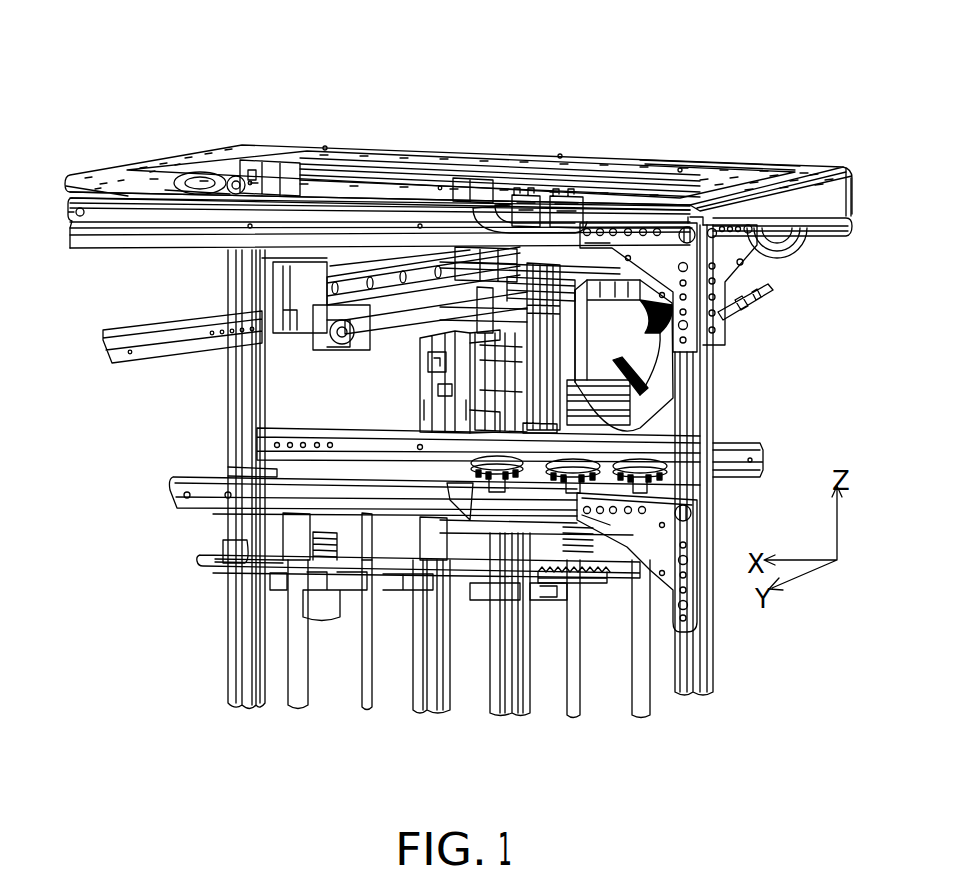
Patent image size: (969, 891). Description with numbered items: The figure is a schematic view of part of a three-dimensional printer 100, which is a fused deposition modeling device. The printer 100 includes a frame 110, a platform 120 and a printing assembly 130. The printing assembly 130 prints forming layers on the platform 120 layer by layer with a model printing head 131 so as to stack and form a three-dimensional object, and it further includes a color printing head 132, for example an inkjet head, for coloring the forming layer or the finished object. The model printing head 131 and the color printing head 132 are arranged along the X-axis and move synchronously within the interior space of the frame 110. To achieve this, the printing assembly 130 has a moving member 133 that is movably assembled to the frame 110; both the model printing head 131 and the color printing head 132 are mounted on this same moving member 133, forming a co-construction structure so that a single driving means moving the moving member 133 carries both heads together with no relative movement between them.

The three-dimensional printer 100 is at (458, 388).
The frame 110 is at (298, 146).
The platform 120 is at (532, 510).
The printing assembly 130 is at (584, 219).
The model printing head 131 is at (443, 410).
The color printing head 132 is at (647, 365).
The moving member 133 is at (541, 365).